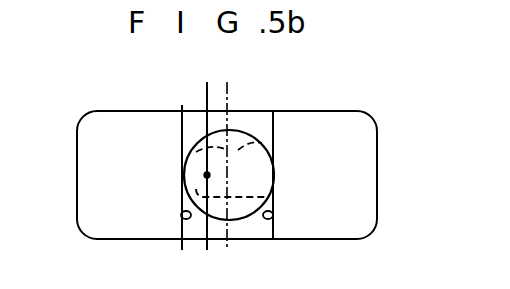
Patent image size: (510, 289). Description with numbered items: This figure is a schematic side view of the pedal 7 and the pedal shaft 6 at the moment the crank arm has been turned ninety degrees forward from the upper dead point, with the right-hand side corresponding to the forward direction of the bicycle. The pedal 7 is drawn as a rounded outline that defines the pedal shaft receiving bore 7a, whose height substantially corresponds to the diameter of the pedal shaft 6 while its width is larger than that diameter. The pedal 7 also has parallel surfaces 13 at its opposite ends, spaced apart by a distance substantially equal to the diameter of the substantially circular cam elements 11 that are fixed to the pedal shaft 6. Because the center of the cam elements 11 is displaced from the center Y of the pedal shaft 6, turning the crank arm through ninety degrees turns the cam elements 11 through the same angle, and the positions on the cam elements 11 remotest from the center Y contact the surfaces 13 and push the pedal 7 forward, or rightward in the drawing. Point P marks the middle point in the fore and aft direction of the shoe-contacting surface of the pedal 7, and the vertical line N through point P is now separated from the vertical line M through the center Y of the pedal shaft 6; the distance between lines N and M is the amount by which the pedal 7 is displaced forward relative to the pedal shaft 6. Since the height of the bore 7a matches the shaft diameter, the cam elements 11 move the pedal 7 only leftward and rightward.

The pedal 7 is at (377, 127).
The pedal shaft receiving bore 7a is at (262, 132).
The pedal shaft 6 is at (232, 171).
The cam elements 11 is at (190, 136).
The parallel surfaces 13 is at (181, 216).
The center of the pedal shaft Y is at (204, 175).
The vertical line through the center of the pedal shaft M is at (192, 149).
The vertical line through point P N is at (231, 149).
The middle point of the pedal surface P is at (224, 109).